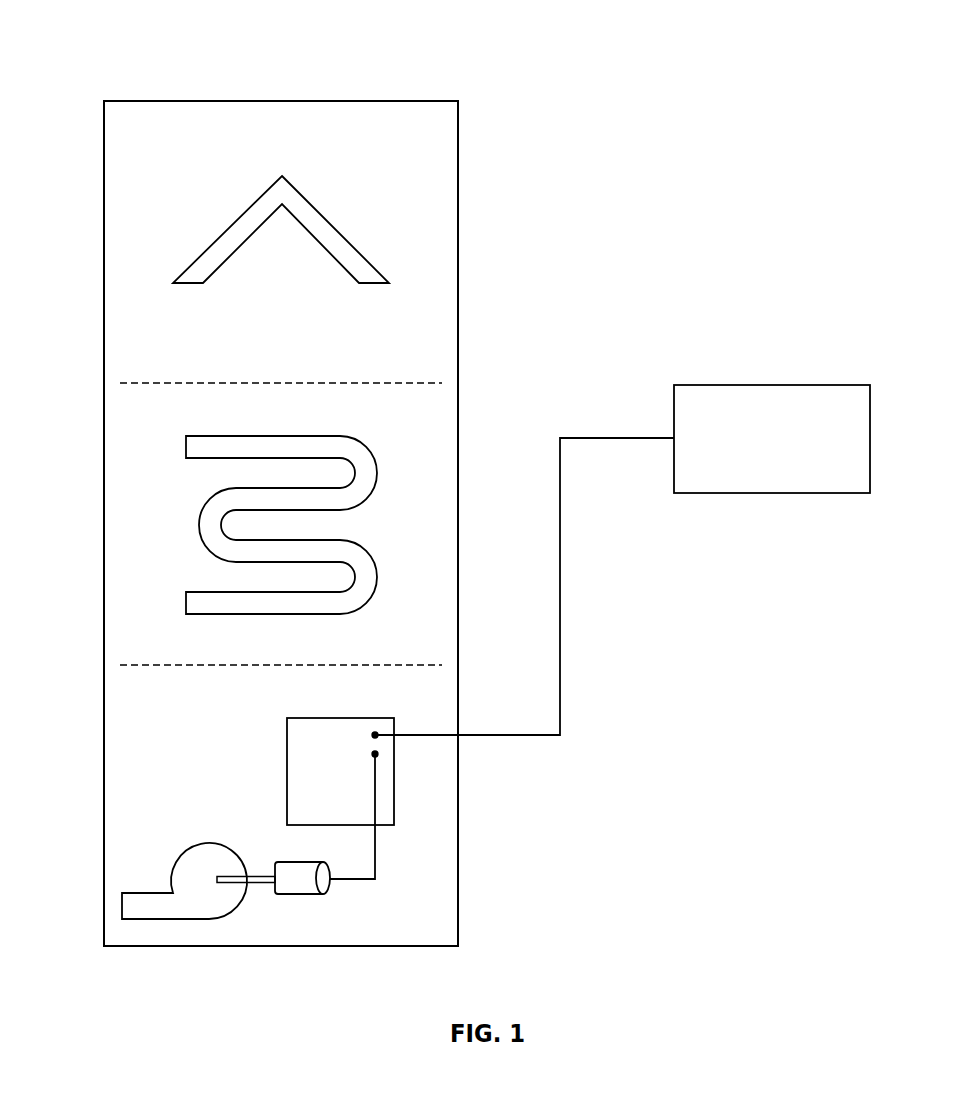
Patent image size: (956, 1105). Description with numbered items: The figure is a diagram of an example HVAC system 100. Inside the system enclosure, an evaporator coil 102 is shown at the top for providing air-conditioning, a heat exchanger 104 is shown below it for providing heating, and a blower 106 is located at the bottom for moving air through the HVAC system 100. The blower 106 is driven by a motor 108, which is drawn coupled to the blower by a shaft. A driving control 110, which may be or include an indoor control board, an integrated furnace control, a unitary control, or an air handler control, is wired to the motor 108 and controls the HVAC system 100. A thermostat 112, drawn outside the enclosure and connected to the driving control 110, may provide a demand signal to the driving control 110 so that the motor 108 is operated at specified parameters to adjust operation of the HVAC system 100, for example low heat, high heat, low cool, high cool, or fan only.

The HVAC system 100 is at (117, 40).
The evaporator coil 102 is at (228, 226).
The heat exchanger 104 is at (250, 436).
The blower 106 is at (152, 908).
The motor 108 is at (300, 881).
The driving control 110 is at (352, 718).
The thermostat 112 is at (740, 385).